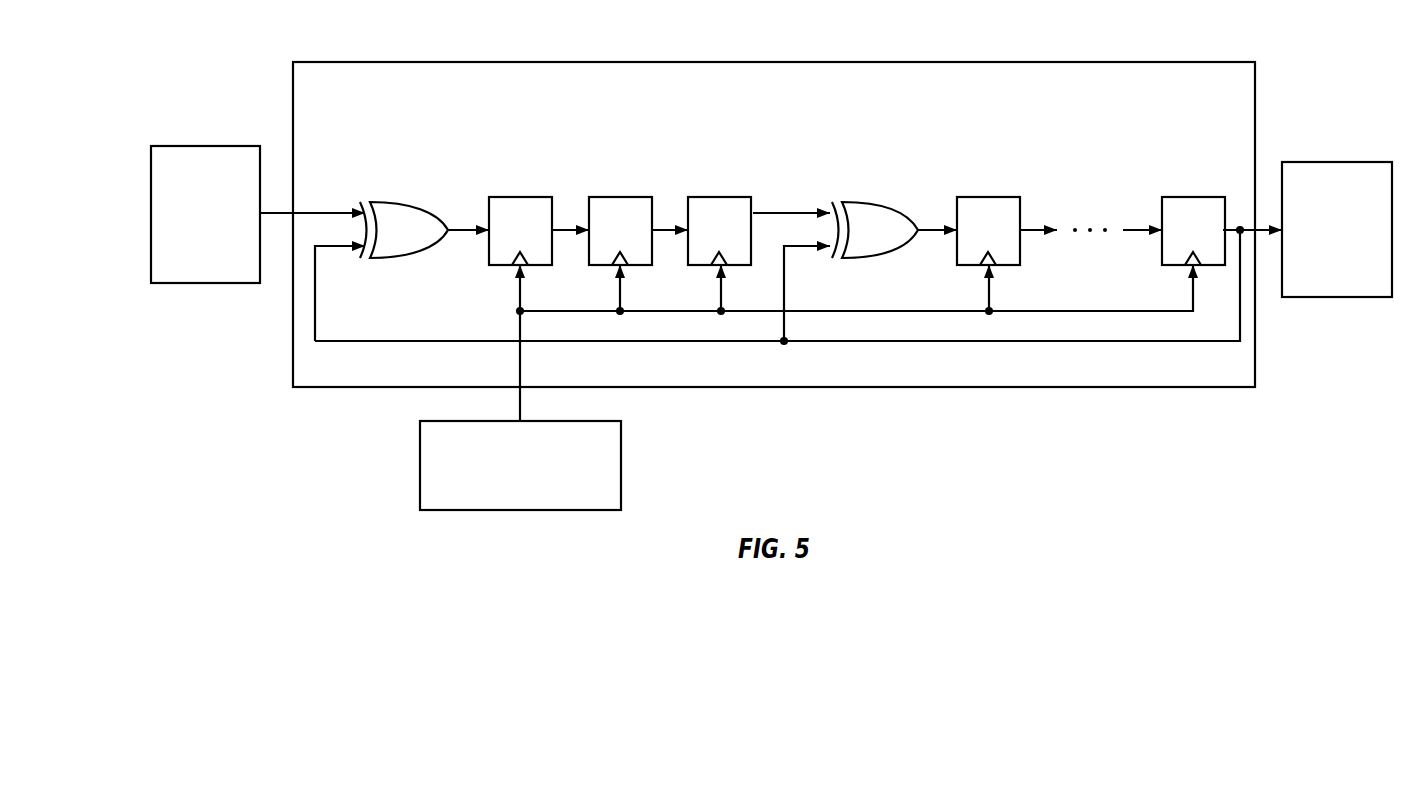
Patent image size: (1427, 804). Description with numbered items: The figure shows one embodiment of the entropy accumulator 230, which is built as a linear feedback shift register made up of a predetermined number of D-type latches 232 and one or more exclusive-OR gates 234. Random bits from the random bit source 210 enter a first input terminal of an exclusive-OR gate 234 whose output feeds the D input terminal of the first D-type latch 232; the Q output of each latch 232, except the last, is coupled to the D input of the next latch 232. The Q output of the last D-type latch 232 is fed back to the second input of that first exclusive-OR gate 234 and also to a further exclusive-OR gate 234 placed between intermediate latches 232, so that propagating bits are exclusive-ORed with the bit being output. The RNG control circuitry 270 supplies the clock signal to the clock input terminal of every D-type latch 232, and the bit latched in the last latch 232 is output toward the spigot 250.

The random bit source (RBS) 210 is at (203, 145).
The entropy accumulator 230 is at (1183, 62).
The D-type latch 232 is at (1192, 196).
The exclusive-OR gate 234 is at (405, 201).
The spigot 250 is at (1340, 161).
The RNG control circuitry 270 is at (565, 511).